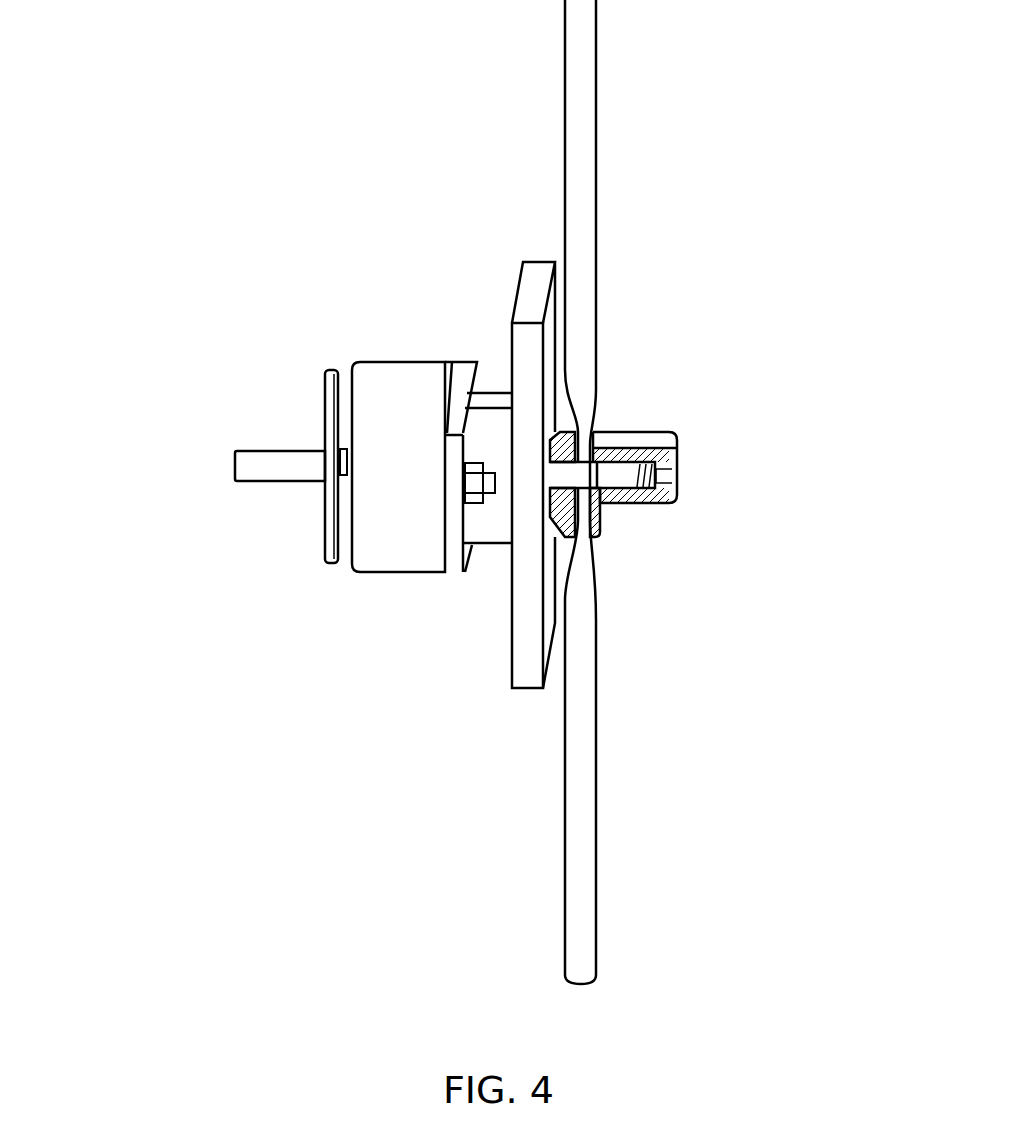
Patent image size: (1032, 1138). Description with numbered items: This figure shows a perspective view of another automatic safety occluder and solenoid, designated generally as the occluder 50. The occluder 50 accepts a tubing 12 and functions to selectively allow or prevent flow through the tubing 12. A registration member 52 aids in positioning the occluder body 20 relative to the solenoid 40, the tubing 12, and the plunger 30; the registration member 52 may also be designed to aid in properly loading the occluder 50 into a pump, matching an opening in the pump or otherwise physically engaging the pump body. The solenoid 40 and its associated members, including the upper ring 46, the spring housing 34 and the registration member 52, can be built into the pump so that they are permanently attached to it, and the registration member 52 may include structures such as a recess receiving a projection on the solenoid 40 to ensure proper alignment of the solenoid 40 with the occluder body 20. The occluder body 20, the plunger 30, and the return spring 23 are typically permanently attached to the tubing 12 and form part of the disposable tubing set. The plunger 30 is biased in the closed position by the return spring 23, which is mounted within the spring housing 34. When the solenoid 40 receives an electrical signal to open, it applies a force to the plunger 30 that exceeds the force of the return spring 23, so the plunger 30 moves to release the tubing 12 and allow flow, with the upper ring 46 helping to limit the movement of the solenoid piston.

The tubing 12 is at (580, 105).
The occluder body 20 is at (647, 449).
The return spring 23 is at (676, 495).
The plunger 30 is at (622, 488).
The spring housing 34 is at (499, 551).
The solenoid 40 is at (397, 365).
The upper ring 46 is at (327, 540).
The occluder 50 is at (222, 322).
The registration member 52 is at (567, 262).